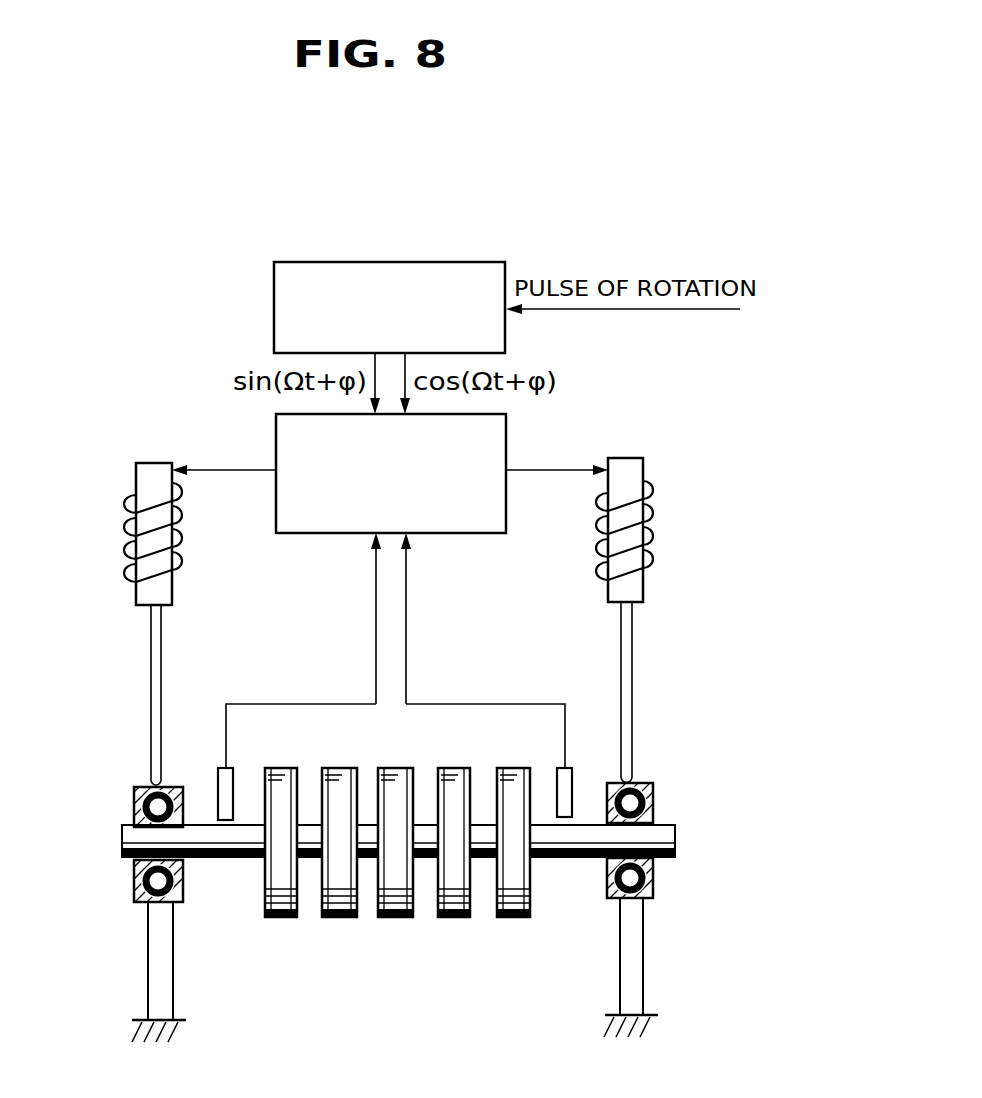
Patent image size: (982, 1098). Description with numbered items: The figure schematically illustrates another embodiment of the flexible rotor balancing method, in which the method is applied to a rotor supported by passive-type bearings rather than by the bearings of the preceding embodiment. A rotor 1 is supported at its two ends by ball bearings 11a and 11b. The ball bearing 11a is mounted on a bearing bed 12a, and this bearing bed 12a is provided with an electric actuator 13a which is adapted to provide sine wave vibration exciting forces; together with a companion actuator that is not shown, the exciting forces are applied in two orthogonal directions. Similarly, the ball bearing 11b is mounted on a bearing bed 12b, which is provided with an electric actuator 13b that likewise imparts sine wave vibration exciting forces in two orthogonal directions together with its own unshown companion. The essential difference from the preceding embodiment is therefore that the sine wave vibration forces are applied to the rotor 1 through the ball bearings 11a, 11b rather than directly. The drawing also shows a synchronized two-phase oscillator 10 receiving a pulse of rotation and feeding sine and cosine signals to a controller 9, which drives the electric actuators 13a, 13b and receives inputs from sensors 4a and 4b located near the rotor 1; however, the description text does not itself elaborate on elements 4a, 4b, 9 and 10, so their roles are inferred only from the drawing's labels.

The rotor 1 is at (388, 917).
The displacement sensor 4a is at (233, 768).
The displacement sensor 4b is at (557, 768).
The controller 9 is at (276, 513).
The synchronized two phase oscillator 10 is at (274, 327).
The ball bearing 11a is at (653, 787).
The ball bearing 11b is at (134, 898).
The bearing bed 12a is at (643, 977).
The bearing bed 12b is at (173, 976).
The electric actuator 13a is at (643, 459).
The electric actuator 13b is at (136, 464).